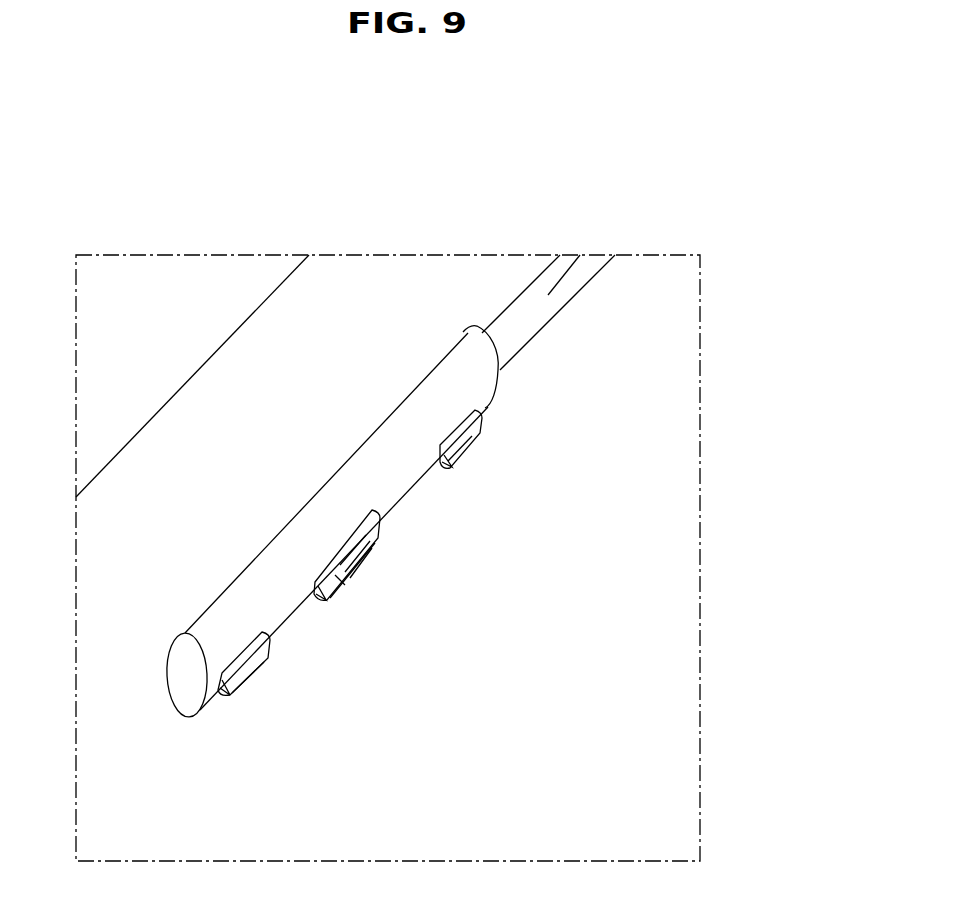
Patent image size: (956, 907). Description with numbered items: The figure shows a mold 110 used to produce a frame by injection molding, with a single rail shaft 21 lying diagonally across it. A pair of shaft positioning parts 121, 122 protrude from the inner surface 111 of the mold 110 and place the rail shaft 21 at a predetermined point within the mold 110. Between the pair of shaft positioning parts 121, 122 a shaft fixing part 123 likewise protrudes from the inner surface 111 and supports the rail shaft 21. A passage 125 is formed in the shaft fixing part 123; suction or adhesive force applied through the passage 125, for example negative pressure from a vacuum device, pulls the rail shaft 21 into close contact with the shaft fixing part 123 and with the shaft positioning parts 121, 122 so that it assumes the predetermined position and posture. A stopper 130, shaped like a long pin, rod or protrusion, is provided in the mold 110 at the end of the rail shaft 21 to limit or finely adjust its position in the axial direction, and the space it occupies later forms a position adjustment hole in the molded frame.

The mold 110 is at (364, 250).
The inner surface 111 is at (542, 722).
The rail shaft 21 is at (278, 535).
The stopper 130 is at (548, 295).
The shaft positioning part 121 is at (250, 657).
The shaft positioning part 122 is at (458, 440).
The shaft fixing part 123 is at (368, 540).
The passage 125 is at (350, 578).